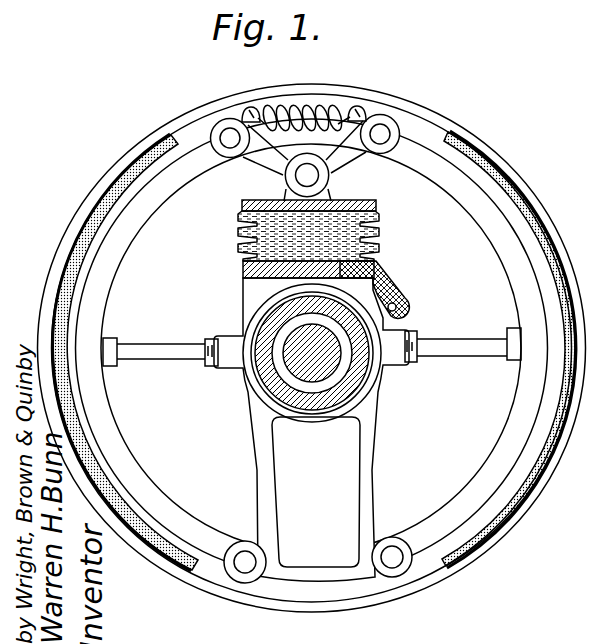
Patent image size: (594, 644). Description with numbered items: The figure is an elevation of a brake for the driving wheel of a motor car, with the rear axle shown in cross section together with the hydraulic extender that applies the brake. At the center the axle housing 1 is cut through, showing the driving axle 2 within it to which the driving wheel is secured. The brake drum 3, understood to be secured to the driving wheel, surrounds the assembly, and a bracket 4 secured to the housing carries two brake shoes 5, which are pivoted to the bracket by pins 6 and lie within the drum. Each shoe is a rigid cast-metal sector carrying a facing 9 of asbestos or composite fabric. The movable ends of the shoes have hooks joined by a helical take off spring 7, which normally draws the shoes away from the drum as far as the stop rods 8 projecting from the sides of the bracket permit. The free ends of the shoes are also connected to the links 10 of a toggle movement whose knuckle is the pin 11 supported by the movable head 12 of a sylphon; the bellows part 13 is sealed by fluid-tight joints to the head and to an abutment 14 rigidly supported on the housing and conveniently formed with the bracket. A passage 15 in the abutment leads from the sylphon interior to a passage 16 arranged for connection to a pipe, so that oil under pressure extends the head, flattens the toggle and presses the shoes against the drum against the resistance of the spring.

The axle housing 1 is at (263, 374).
The driving axle 2 is at (305, 368).
The brake drum 3 is at (248, 603).
The bracket 4 is at (365, 462).
The brake shoes 5 is at (134, 238).
The pins 6 is at (242, 566).
The take off spring 7 is at (334, 105).
The stop rods 8 is at (158, 361).
The facing 9 is at (113, 190).
The links 10 is at (257, 165).
The pin 11 is at (305, 173).
The movable head 12 is at (355, 201).
The bellows part 13 is at (381, 243).
The abutment 14 is at (243, 276).
The passage 15 is at (400, 283).
The passage 16 is at (400, 308).